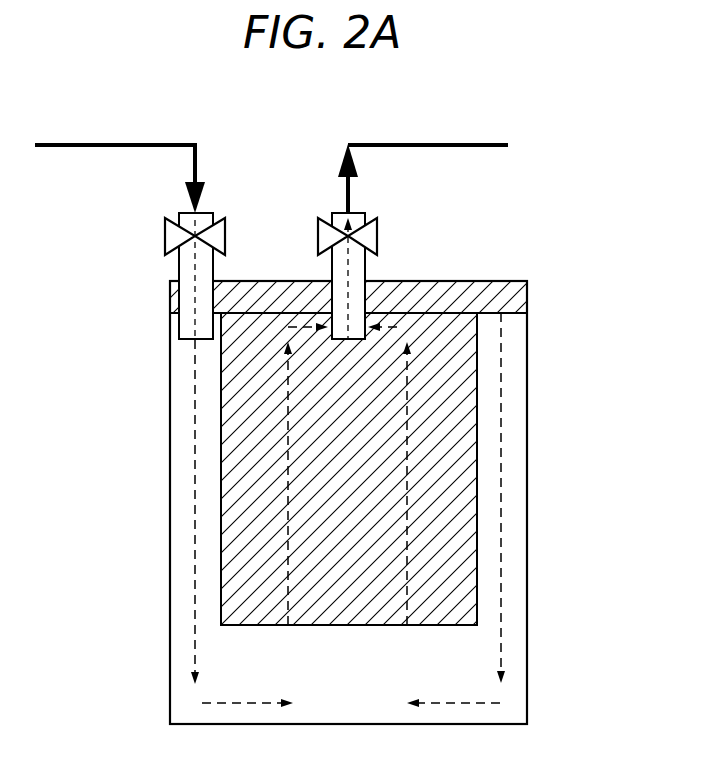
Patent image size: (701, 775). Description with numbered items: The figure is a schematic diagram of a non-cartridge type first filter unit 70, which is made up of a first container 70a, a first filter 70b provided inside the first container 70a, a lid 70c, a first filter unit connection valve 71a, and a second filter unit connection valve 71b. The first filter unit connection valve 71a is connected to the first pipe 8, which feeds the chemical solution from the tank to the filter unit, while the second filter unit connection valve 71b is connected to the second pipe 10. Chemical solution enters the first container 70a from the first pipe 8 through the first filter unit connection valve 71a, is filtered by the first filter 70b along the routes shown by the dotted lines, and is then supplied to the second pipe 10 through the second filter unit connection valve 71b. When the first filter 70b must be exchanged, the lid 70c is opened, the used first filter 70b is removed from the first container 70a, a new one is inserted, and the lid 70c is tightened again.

The first pipe 8 is at (78, 143).
The second pipe 10 is at (388, 143).
The first filter unit 70 is at (548, 223).
The first container 70a is at (527, 620).
The first filter 70b is at (265, 625).
The lid 70c is at (462, 280).
The first filter unit connection valve 71a is at (225, 232).
The second filter unit connection valve 71b is at (377, 230).